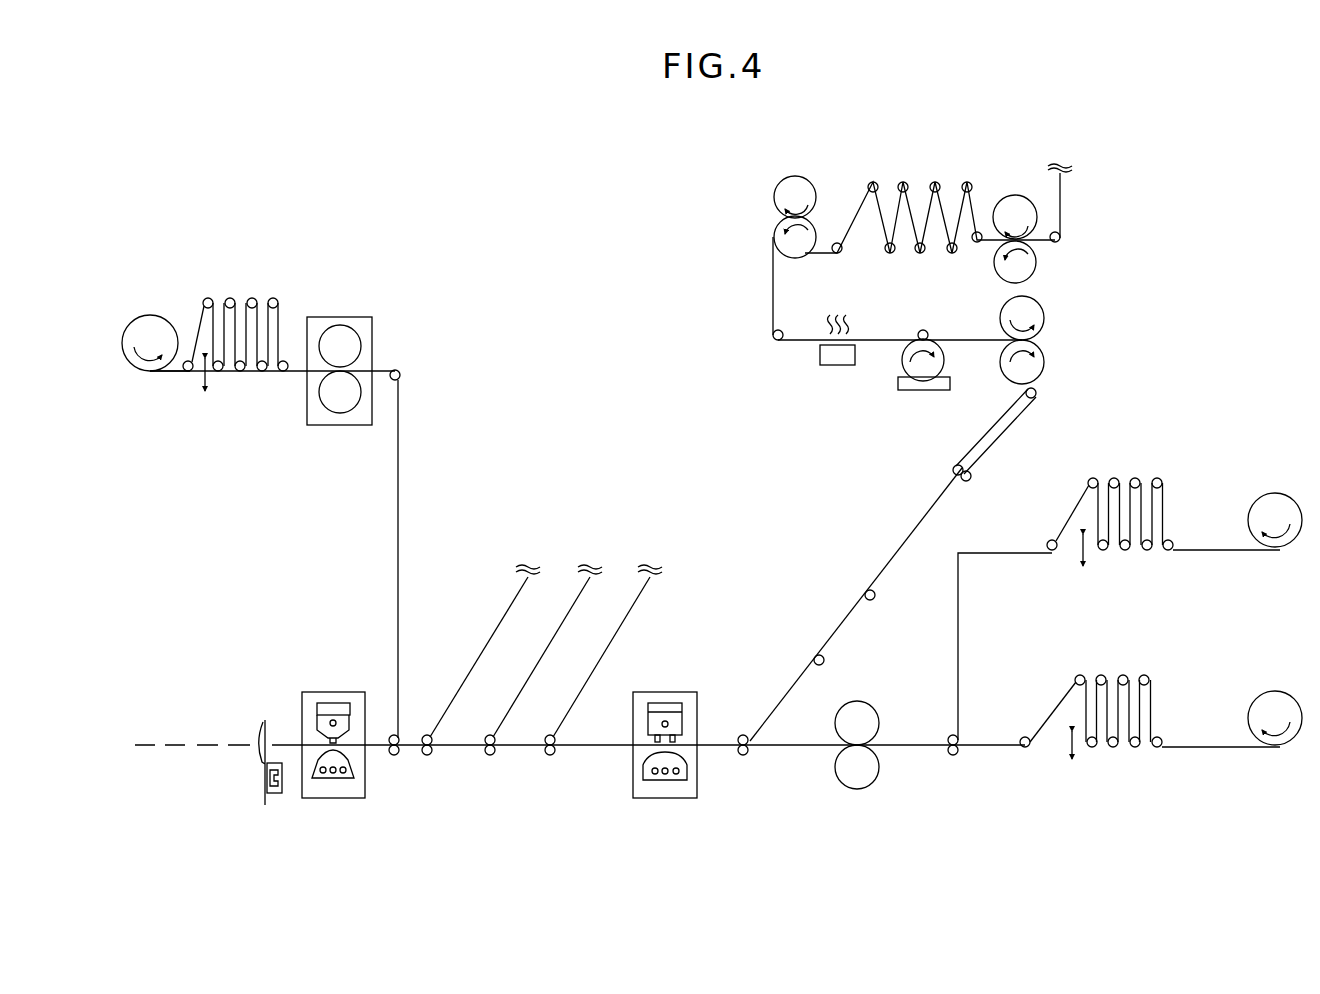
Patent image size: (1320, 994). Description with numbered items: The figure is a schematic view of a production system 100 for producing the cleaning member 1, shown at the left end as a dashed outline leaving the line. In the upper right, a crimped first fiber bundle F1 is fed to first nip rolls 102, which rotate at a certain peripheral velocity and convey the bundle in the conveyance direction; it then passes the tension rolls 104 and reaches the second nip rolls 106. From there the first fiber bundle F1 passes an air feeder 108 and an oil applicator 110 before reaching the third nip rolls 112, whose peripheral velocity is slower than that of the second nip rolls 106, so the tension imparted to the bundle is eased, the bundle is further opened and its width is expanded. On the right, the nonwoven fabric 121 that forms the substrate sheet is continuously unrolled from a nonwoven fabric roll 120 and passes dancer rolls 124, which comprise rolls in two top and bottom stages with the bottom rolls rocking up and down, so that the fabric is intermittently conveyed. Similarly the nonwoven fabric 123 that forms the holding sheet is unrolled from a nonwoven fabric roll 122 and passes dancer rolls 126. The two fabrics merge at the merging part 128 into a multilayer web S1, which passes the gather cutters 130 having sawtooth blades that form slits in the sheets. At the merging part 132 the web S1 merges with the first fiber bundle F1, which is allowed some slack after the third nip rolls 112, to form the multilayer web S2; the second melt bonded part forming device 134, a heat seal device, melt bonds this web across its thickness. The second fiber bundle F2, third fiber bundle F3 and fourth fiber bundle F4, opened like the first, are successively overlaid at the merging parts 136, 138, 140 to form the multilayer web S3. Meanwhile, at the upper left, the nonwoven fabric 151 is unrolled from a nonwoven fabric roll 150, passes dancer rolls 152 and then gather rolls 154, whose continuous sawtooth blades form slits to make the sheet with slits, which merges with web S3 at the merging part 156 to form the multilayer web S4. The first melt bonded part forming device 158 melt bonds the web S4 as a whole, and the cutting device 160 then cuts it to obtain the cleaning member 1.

The cleaning member 1 is at (240, 748).
The production system 100 is at (1165, 176).
The first nip rolls 102 is at (1012, 210).
The tension rolls 104 is at (935, 182).
The second nip rolls 106 is at (797, 190).
The air feeder 108 is at (825, 358).
The oil applicator 110 is at (905, 365).
The third nip rolls 112 is at (1030, 312).
The nonwoven fabric roll 120 is at (1275, 700).
The nonwoven fabric 121 is at (1190, 745).
The nonwoven fabric roll 122 is at (1275, 505).
The nonwoven fabric 123 is at (1200, 548).
The dancer rolls 124 is at (1112, 665).
The dancer rolls 126 is at (1112, 468).
The merging part 128 is at (966, 733).
The gather cutters 130 is at (852, 712).
The merging part 132 is at (749, 760).
The second melt bonded part forming device 134 is at (667, 692).
The merging part 136 is at (556, 760).
The merging part 138 is at (494, 760).
The merging part 140 is at (434, 760).
The nonwoven fabric roll 150 is at (150, 328).
The nonwoven fabric 151 is at (170, 375).
The dancer rolls 152 is at (255, 285).
The gather rolls 154 is at (339, 306).
The merging part 156 is at (394, 762).
The first melt bonded part forming device 158 is at (320, 692).
The cutting device 160 is at (278, 795).
The first fiber bundle F1 is at (770, 712).
The second fiber bundle F2 is at (607, 639).
The third fiber bundle F3 is at (547, 639).
The fourth fiber bundle F4 is at (485, 639).
The multilayer web S1 is at (908, 744).
The multilayer web S2 is at (720, 744).
The multilayer web S3 is at (406, 752).
The multilayer web S4 is at (375, 744).